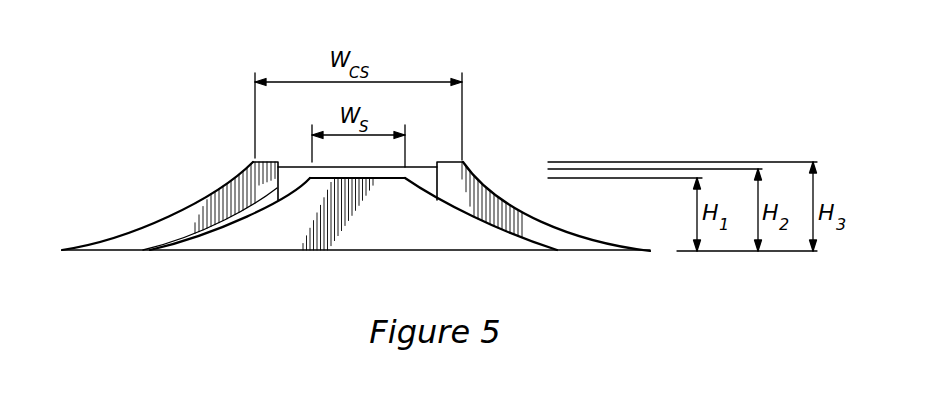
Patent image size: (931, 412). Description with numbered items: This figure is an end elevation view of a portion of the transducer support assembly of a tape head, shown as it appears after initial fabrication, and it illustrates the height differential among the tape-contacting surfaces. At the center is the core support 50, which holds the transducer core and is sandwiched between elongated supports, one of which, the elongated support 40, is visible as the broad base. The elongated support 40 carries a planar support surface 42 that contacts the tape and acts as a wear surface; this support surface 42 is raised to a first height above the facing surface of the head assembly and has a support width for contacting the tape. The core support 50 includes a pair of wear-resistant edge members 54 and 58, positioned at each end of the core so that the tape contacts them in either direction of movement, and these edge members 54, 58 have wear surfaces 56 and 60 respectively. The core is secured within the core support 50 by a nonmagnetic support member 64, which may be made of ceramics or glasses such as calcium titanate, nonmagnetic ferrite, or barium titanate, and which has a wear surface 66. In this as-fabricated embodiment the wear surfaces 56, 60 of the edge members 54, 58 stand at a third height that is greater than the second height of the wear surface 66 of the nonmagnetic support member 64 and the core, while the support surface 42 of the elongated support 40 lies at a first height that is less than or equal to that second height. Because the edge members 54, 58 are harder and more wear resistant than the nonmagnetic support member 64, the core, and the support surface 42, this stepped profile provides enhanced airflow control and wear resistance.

The elongated support 40 is at (290, 252).
The support surface 42 is at (343, 178).
The core support 50 is at (356, 196).
The wear-resistant edge member 54 is at (472, 171).
The wear surface 56 is at (450, 161).
The wear-resistant edge member 58 is at (235, 178).
The wear surface 60 is at (265, 161).
The nonmagnetic support member 64 is at (228, 218).
The wear surface 66 is at (303, 167).